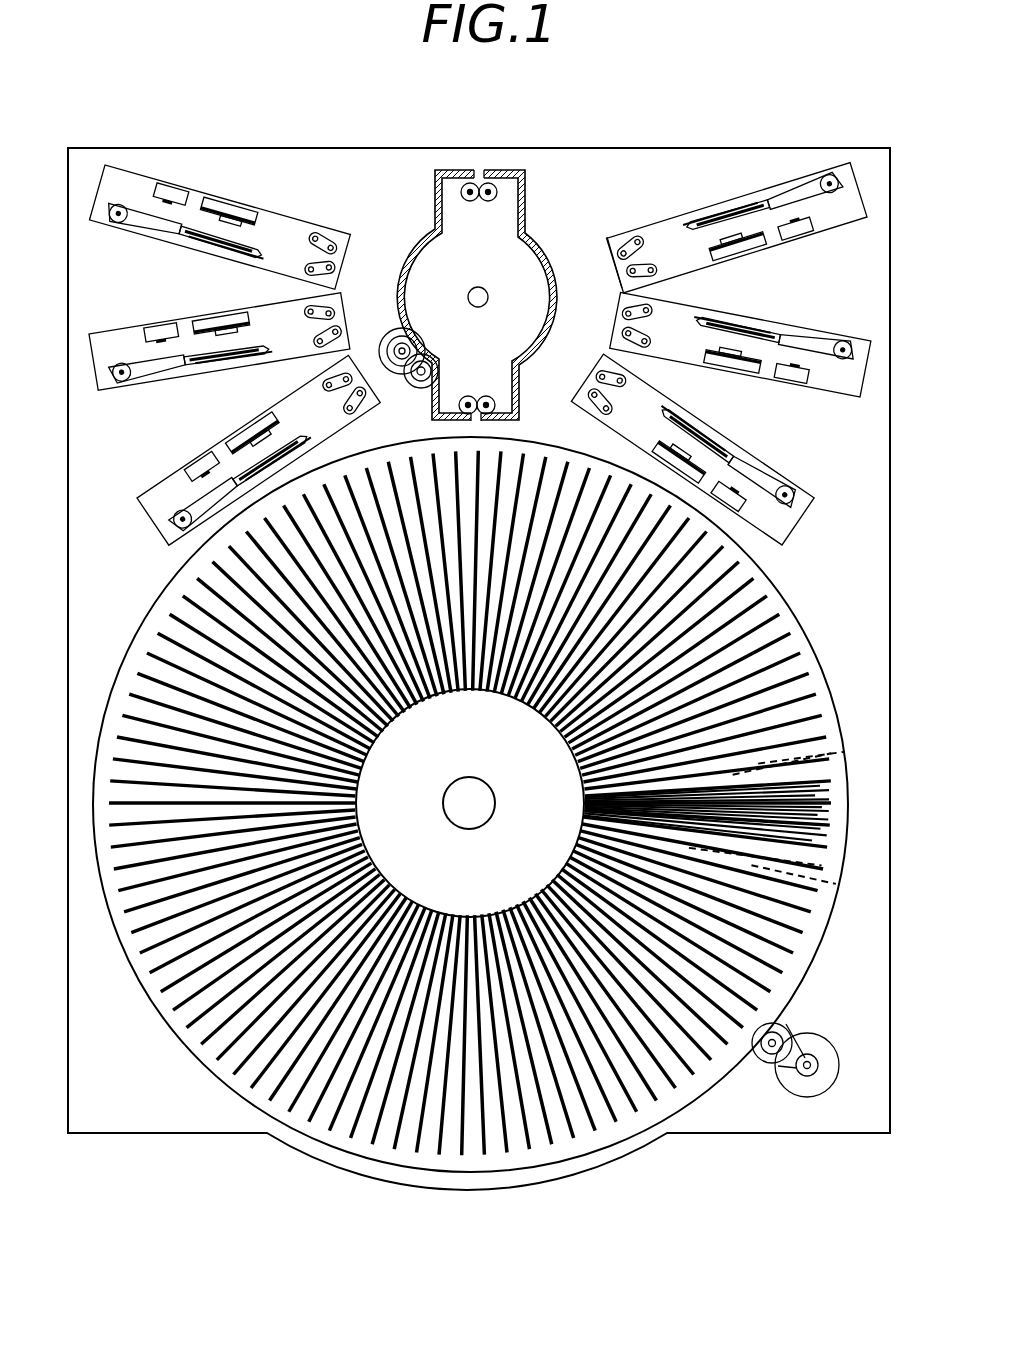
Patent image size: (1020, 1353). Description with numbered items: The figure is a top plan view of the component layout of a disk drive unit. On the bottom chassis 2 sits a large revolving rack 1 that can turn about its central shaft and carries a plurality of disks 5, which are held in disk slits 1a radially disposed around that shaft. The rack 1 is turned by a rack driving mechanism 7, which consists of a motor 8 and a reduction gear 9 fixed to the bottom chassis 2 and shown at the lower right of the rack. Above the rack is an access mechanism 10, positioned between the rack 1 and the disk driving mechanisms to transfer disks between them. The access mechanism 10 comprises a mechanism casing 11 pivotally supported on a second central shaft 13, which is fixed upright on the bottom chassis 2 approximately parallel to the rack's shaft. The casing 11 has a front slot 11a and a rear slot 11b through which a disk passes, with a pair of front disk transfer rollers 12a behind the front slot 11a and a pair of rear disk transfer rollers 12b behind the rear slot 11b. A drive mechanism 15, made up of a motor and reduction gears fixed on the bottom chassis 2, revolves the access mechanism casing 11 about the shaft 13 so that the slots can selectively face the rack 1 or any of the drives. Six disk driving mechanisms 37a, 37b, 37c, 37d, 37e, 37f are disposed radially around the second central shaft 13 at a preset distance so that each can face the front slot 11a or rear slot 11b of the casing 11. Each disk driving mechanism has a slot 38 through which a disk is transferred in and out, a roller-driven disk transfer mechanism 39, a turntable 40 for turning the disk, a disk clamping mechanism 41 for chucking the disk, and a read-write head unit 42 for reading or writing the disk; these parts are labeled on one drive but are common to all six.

The rack 1 is at (496, 803).
The disk slits 1a is at (470, 803).
The bottom chassis 2 is at (229, 148).
The disks 5 is at (706, 817).
The rack driving mechanism 7 is at (765, 1082).
The motor 8 is at (826, 1088).
The reduction gear 9 is at (790, 1030).
The access mechanism 10 is at (468, 275).
The mechanism casing 11 is at (455, 275).
The front slot 11a is at (470, 421).
The rear slot 11b is at (479, 171).
The front disk transfer rollers 12a is at (482, 396).
The rear disk transfer rollers 12b is at (498, 192).
The second central shaft 13 is at (489, 297).
The drive mechanism of the access mechanism 15 is at (392, 336).
The disk driving mechanism 37a is at (719, 211).
The disk driving mechanism 37b is at (798, 388).
The disk driving mechanism 37c is at (775, 470).
The disk driving mechanism 37d is at (285, 216).
The disk driving mechanism 37e is at (120, 328).
The disk driving mechanism 37f is at (148, 490).
The slot 38 is at (613, 262).
The roller-driven disk transfer mechanism 39 is at (622, 233).
The turntable 40 is at (745, 256).
The disk clamping mechanism 41 is at (738, 208).
The read-write head unit 42 is at (816, 236).